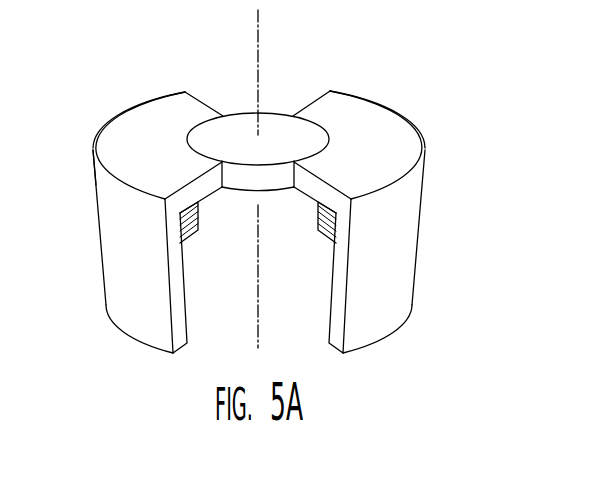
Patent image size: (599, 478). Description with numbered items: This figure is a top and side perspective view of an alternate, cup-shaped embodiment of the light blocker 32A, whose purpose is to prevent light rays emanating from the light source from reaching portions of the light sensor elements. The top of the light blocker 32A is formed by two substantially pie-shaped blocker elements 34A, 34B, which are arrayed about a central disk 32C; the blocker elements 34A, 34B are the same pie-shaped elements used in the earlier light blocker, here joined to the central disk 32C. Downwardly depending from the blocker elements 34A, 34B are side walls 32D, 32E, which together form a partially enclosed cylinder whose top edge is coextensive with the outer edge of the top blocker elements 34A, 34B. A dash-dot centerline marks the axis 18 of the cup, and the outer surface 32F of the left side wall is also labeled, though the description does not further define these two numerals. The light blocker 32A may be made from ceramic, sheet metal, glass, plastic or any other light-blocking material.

The longitudinal axis 18 is at (259, 60).
The light blocker 32A is at (440, 122).
The central disk 32C is at (230, 134).
The side wall 32D is at (130, 267).
The side wall 32E is at (385, 266).
The outer surface 32F is at (112, 178).
The blocker element 34A is at (142, 125).
The blocker element 34B is at (368, 132).